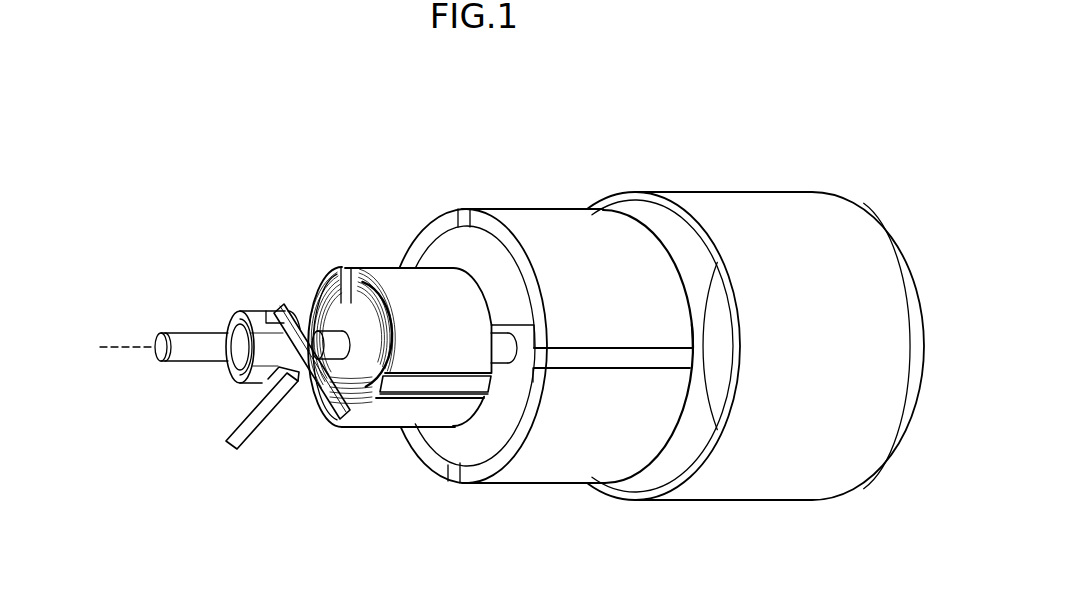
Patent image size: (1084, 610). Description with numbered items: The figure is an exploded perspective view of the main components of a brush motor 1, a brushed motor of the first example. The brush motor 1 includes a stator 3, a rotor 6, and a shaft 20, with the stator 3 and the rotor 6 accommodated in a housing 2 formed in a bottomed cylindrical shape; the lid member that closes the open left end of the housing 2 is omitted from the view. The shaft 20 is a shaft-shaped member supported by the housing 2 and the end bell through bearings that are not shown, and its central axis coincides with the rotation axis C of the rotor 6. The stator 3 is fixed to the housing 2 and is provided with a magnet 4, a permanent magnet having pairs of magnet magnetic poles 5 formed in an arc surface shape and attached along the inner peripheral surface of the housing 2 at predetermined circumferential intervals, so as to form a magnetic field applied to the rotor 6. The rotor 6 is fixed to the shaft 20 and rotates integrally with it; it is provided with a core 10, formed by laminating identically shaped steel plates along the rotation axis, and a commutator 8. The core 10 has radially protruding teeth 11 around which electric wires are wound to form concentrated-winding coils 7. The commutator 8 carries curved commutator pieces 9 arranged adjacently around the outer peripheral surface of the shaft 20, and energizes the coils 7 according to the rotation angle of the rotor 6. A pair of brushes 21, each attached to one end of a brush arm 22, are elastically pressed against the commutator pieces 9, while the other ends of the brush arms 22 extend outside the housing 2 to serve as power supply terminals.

The brush motor 1 is at (146, 160).
The housing 2 is at (755, 190).
The stator 3 is at (525, 187).
The magnet 4 is at (561, 491).
The magnet magnetic pole 5 is at (591, 297).
The rotor 6 is at (313, 192).
The coil 7 is at (350, 420).
The commutator 8 is at (273, 286).
The commutator piece 9 is at (262, 380).
The core 10 is at (364, 261).
The tooth 11 is at (422, 418).
The shaft 20 is at (183, 364).
The brush 21 is at (262, 312).
The brush arm 22 is at (255, 440).